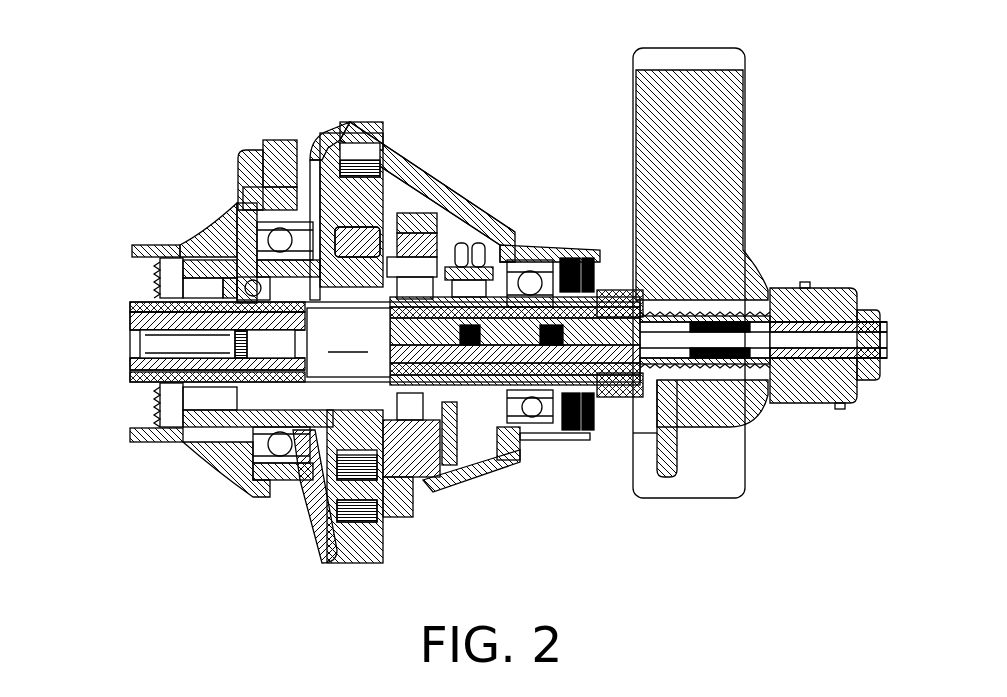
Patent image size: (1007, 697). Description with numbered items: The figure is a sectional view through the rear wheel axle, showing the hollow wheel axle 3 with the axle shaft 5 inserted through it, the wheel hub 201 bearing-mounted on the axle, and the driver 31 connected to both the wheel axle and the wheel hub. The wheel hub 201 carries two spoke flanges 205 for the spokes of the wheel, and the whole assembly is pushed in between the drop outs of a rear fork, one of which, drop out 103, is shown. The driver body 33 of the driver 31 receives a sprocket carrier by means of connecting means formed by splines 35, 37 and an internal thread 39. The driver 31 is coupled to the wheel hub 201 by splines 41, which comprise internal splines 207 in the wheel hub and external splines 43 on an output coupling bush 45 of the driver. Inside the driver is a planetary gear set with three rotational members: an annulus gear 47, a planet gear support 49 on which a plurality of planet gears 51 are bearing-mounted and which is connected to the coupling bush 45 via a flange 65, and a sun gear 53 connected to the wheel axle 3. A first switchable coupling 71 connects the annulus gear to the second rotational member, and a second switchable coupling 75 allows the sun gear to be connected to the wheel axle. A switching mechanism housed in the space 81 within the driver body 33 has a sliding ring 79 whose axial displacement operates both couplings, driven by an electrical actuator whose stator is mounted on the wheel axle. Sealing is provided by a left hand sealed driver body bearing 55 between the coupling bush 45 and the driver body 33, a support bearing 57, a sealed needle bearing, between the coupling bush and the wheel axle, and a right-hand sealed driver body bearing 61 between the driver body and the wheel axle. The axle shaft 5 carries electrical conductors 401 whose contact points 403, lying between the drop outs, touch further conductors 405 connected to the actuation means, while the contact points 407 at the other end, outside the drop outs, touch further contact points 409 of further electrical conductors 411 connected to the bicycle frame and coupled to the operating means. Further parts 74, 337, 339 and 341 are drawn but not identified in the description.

The wheel axle 3 is at (140, 255).
The axle shaft 5 is at (132, 322).
The driver 31 is at (436, 147).
The driver body 33 is at (392, 150).
The splines 35 is at (363, 123).
The splines 37 is at (545, 445).
The internal thread 39 is at (600, 272).
The splines 41 is at (200, 450).
The external splines 43 is at (228, 428).
The output coupling bush 45 is at (255, 465).
The annulus gear 47 is at (358, 530).
The planet gear support 49 is at (322, 480).
The planet gears 51 is at (395, 450).
The sun gear 53 is at (400, 478).
The left hand sealed driver body bearing 55 is at (282, 205).
The support bearing 57 is at (250, 223).
The right-hand sealed driver body bearing 61 is at (575, 440).
The flange 65 is at (322, 440).
The first switchable coupling 71 is at (432, 246).
The gear 74 is at (430, 213).
The second switchable coupling 75 is at (247, 152).
The sliding ring 79 is at (457, 440).
The space 81 is at (470, 265).
The drop out 103 is at (688, 110).
The wheel hub 201 is at (182, 236).
The spoke flanges 205 is at (283, 140).
The internal splines 207 is at (160, 405).
The cavity 337 is at (155, 347).
The sensor 339 is at (348, 342).
The opening 341 is at (280, 345).
The electrical conductors 401 is at (742, 378).
The contact points 403 is at (587, 258).
The further conductors 405 is at (540, 300).
The contact points 407 is at (795, 328).
The further contact points 409 is at (858, 318).
The further electrical conductors 411 is at (898, 358).